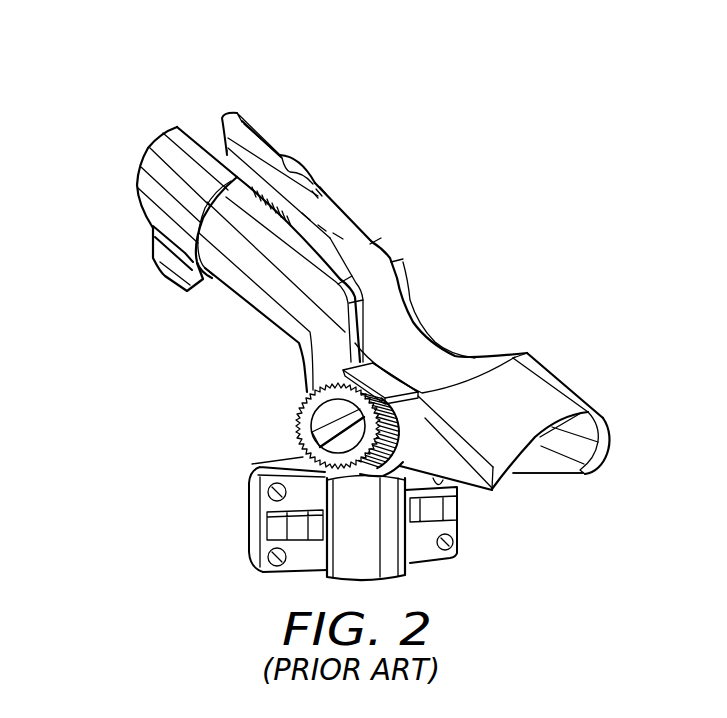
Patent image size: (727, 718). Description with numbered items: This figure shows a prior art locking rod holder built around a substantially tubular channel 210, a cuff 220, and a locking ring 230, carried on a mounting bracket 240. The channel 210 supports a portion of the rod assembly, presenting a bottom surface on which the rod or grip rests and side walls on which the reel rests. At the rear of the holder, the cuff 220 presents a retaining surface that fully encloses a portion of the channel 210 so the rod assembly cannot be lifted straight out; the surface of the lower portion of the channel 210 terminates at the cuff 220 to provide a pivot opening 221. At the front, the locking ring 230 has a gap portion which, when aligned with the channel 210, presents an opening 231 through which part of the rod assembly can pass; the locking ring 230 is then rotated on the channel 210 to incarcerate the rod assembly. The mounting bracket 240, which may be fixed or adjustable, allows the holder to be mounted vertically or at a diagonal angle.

The channel 210 is at (367, 263).
The cuff 220 is at (547, 387).
The pivot opening 221 is at (547, 482).
The locking ring 230 is at (157, 200).
The opening 231 is at (203, 119).
The mounting bracket 240 is at (252, 522).